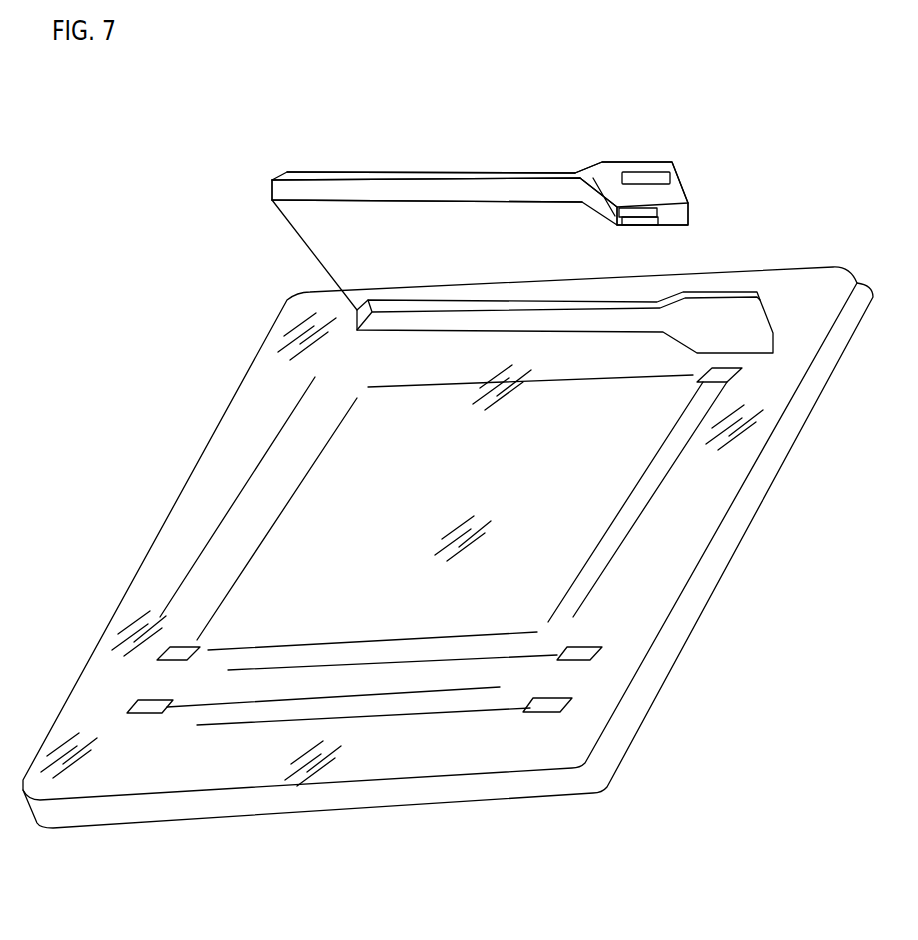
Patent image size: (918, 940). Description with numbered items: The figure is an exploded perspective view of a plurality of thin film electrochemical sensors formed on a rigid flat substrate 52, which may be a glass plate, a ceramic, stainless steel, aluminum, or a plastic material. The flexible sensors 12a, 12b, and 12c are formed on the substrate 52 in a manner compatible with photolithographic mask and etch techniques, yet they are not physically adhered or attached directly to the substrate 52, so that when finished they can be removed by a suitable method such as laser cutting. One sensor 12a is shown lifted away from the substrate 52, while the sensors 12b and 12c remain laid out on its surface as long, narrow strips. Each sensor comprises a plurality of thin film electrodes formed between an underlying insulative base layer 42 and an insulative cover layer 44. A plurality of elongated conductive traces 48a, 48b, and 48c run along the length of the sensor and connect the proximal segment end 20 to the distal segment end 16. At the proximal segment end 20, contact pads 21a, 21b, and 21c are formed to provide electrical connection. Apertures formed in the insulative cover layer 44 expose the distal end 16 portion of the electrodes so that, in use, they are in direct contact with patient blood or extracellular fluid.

The flexible sensor 12a is at (307, 123).
The flexible sensor 12b is at (275, 700).
The flexible sensor 12c is at (355, 641).
The distal segment end 16 is at (268, 197).
The proximal segment end 20 is at (696, 167).
The contact pad 21a is at (638, 174).
The contact pad 21b is at (658, 213).
The contact pad 21c is at (630, 223).
The insulative base layer 42 is at (677, 328).
The insulative cover layer 44 is at (707, 295).
The elongated conductive trace 48a is at (401, 176).
The elongated conductive trace 48b is at (426, 179).
The elongated conductive trace 48c is at (427, 201).
The substrate 52 is at (767, 497).